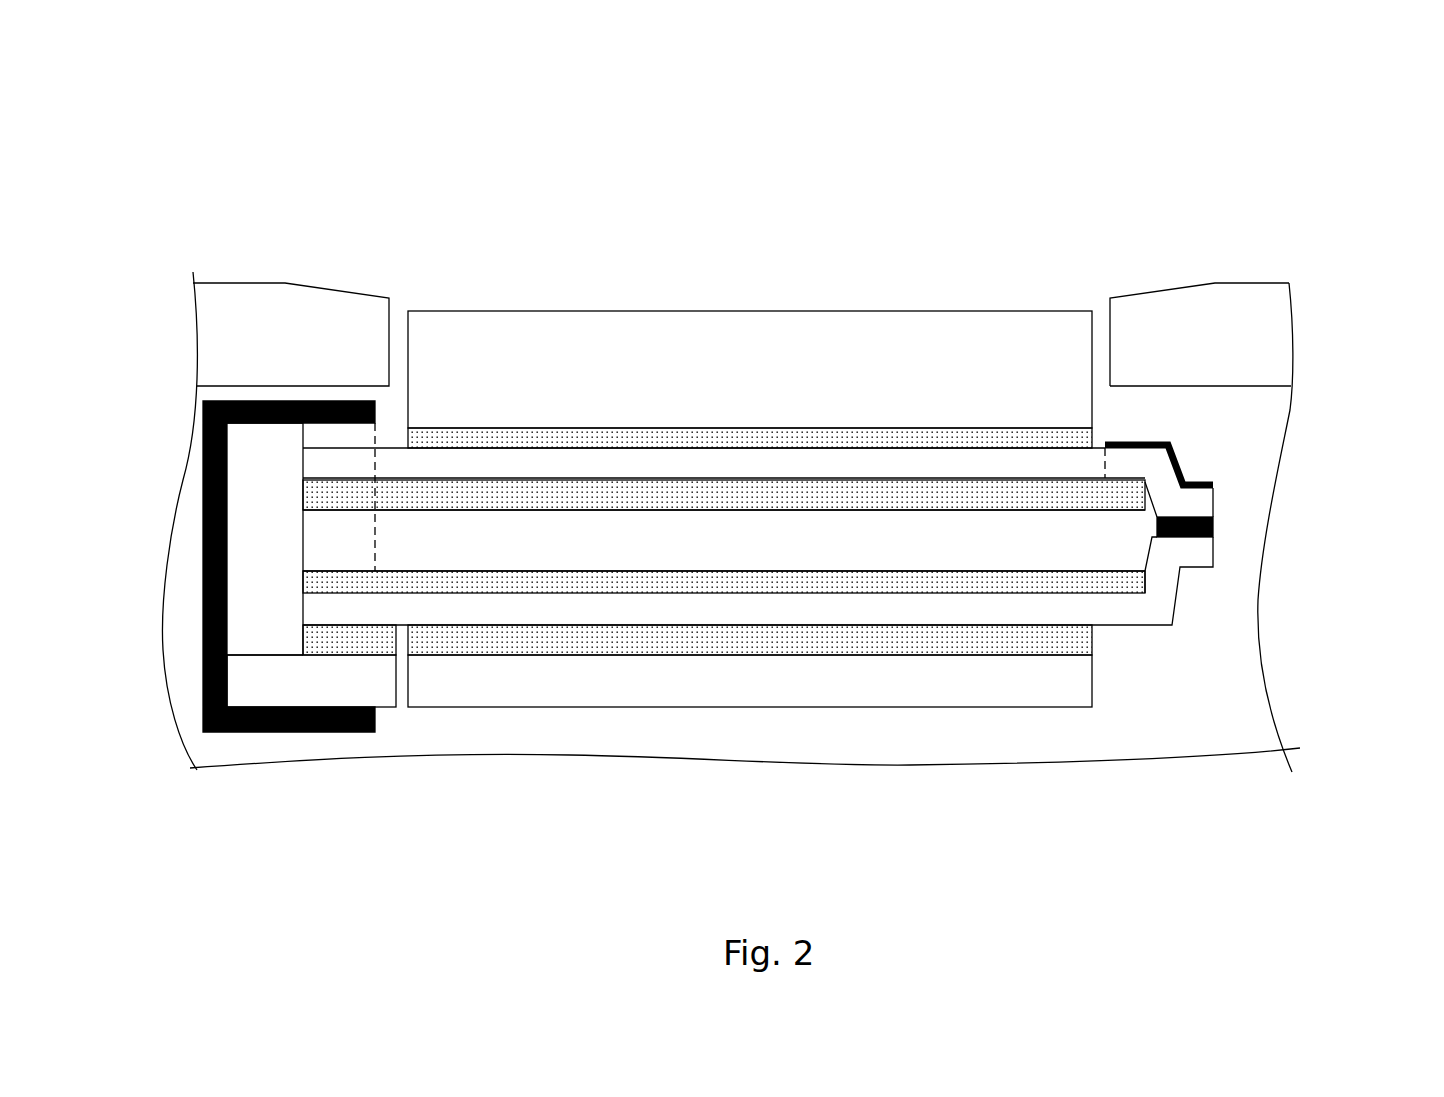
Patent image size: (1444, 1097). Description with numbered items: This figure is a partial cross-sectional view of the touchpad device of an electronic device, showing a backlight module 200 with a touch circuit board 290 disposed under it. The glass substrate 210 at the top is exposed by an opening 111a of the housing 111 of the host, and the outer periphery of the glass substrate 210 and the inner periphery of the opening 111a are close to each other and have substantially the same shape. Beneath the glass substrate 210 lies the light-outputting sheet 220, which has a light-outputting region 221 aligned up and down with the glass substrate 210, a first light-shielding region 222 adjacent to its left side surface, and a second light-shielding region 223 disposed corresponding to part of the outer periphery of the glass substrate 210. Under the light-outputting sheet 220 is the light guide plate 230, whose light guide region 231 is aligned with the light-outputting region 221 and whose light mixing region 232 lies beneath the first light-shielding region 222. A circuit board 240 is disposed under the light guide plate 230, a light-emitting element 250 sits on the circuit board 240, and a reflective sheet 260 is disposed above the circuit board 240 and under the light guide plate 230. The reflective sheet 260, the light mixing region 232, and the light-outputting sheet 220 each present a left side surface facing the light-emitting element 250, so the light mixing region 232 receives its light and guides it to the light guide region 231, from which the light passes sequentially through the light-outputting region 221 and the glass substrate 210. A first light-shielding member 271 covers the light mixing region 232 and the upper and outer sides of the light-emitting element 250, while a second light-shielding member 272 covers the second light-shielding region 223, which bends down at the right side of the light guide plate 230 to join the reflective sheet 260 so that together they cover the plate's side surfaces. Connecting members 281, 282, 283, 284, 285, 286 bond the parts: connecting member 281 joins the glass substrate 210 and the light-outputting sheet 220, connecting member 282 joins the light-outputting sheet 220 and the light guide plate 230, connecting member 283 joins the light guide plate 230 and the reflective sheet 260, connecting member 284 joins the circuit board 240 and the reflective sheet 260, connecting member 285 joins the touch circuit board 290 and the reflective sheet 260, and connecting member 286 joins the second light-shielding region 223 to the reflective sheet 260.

The backlight module 200 is at (918, 762).
The housing 111 is at (1236, 325).
The opening 111a is at (1102, 278).
The glass substrate 210 is at (745, 325).
The light-outputting sheet 220 is at (1398, 57).
The light-outputting region 221 is at (852, 465).
The first light-shielding region 222 is at (347, 465).
The second light-shielding region 223 is at (1213, 500).
The light guide plate 230 is at (1398, 160).
The light guide region 231 is at (1131, 553).
The light mixing region 232 is at (310, 537).
The circuit board 240 is at (238, 678).
The light-emitting element 250 is at (240, 570).
The reflective sheet 260 is at (1120, 615).
The first light-shielding member 271 is at (203, 483).
The second light-shielding member 272 is at (1187, 470).
The connecting member 281 is at (520, 440).
The connecting member 282 is at (632, 500).
The connecting member 283 is at (310, 583).
The connecting member 284 is at (310, 635).
The connecting member 285 is at (620, 642).
The connecting member 286 is at (1213, 525).
The touch circuit board 290 is at (752, 690).